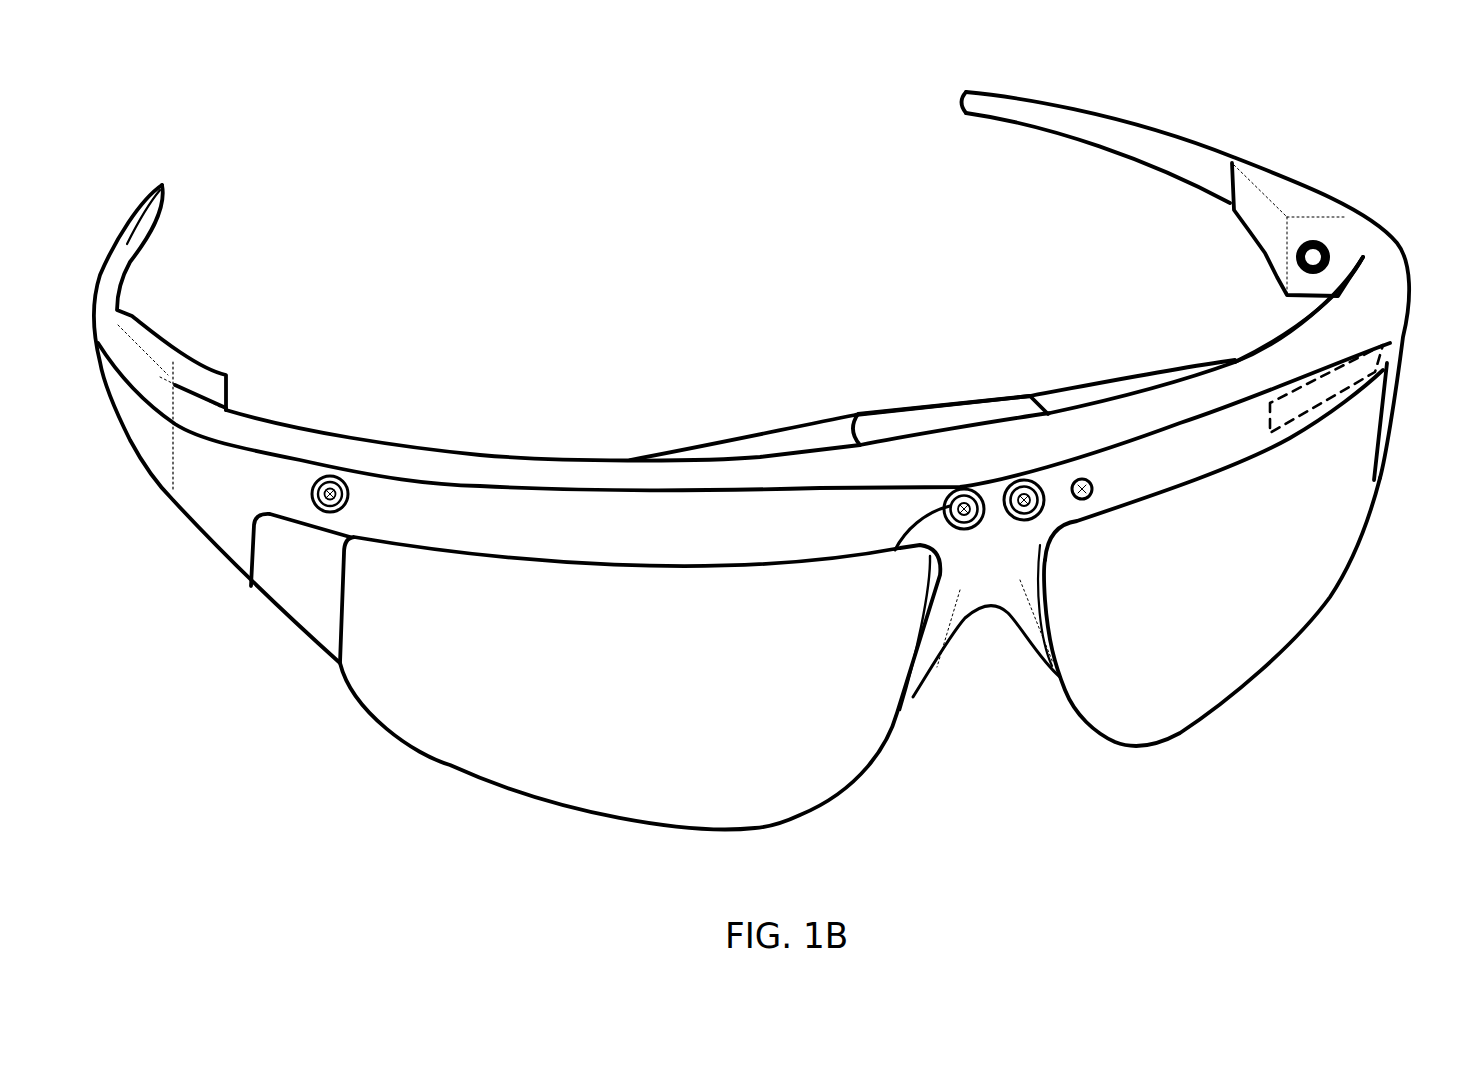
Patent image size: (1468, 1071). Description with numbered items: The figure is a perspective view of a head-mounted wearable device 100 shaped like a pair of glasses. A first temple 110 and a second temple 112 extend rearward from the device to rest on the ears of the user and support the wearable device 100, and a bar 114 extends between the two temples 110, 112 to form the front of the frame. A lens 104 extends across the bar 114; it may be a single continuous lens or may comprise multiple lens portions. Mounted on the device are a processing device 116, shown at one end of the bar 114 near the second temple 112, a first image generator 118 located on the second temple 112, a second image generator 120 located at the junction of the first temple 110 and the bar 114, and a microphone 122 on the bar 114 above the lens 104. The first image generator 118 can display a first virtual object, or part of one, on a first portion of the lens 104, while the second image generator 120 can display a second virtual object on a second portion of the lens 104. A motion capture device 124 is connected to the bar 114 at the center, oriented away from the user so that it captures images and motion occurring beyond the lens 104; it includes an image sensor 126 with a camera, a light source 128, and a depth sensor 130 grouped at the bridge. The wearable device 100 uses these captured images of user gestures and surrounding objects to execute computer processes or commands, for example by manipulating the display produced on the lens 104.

The wearable device 100 is at (553, 80).
The lens 104 is at (437, 728).
The first temple 110 is at (145, 241).
The second temple 112 is at (1040, 117).
The bar 114 is at (553, 510).
The processing device 116 is at (1392, 338).
The first image generator 118 is at (1278, 246).
The second image generator 120 is at (177, 358).
The microphone 122 is at (334, 476).
The motion capture device 124 is at (983, 450).
The image sensor 126 is at (940, 511).
The light source 128 is at (1093, 493).
The depth sensor 130 is at (998, 527).